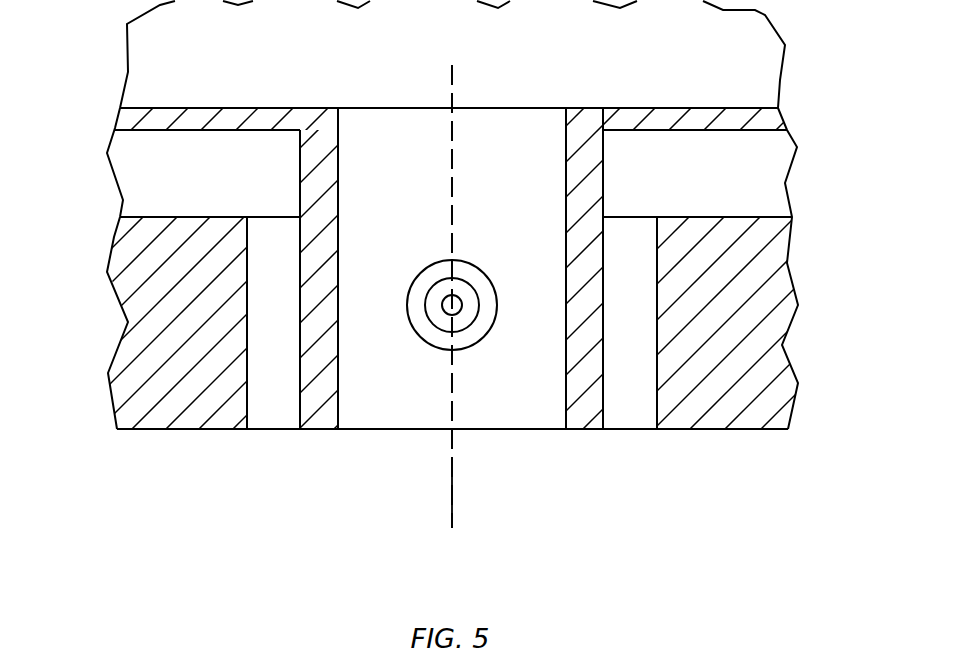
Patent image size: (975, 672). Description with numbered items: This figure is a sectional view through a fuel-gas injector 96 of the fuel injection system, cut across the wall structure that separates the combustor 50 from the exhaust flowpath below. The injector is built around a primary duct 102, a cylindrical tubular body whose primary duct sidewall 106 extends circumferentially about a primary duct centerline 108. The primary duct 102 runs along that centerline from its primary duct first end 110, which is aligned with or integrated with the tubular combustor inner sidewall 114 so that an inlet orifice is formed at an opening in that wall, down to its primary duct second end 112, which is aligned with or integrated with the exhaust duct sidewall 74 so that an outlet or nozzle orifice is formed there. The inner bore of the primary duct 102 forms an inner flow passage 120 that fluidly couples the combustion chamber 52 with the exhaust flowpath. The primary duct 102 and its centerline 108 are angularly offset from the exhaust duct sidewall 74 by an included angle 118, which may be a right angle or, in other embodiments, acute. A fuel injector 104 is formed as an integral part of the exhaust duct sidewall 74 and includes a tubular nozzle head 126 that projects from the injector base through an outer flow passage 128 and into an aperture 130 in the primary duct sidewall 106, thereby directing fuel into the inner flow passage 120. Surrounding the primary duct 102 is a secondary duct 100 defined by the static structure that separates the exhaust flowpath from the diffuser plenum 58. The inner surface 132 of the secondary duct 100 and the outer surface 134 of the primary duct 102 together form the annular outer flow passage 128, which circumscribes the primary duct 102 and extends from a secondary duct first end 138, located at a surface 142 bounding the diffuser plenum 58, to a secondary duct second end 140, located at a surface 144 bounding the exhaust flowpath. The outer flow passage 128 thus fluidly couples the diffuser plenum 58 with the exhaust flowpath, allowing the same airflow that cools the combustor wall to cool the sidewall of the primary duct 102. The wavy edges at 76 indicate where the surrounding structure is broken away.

The combustor 50 is at (786, 118).
The combustion chamber 52 is at (366, 42).
The diffuser plenum 58 is at (153, 182).
The exhaust duct sidewall 74 is at (133, 429).
The side wall 76 is at (112, 343).
The fuel-gas injector 96 is at (368, 476).
The secondary duct 100 is at (267, 442).
The primary duct 102 is at (485, 128).
The fuel injector 104 is at (421, 334).
The primary duct sidewall 106 is at (300, 167).
The primary duct centerline 108 is at (452, 528).
The primary duct first end 110 is at (578, 108).
The primary duct second end 112 is at (582, 430).
The combustor inner sidewall 114 is at (707, 108).
The included angle 118 is at (538, 434).
The inner flow passage 120 is at (397, 211).
The nozzle head 126 is at (470, 288).
The outer flow passage 128 is at (264, 328).
The aperture 130 is at (487, 318).
The secondary duct inner surface 132 is at (258, 398).
The primary duct outer surface 134 is at (300, 405).
The secondary duct first end 138 is at (657, 222).
The secondary duct second end 140 is at (657, 405).
The surface forming peripheral boundary of diffuser plenum 142 is at (763, 217).
The surface forming peripheral boundary of exhaust flowpath 144 is at (728, 430).